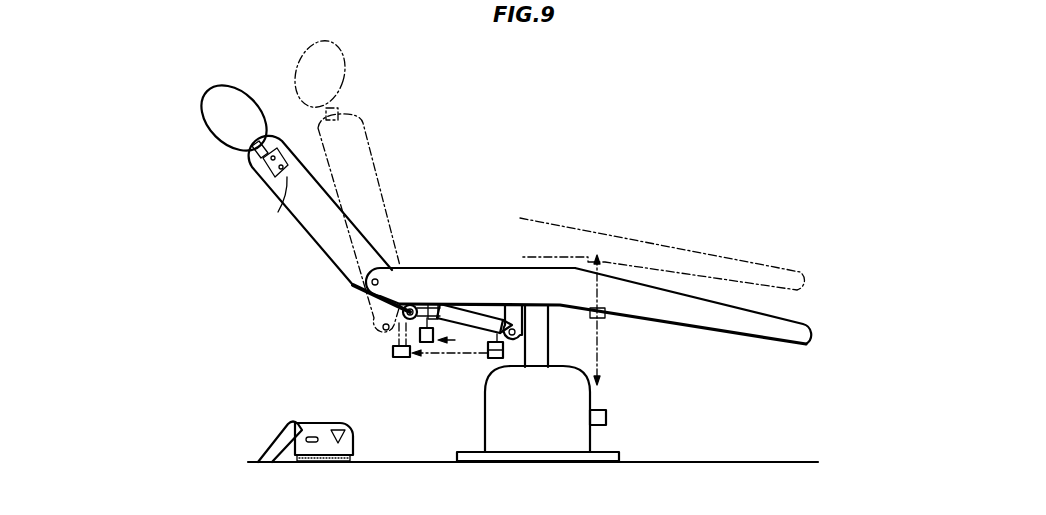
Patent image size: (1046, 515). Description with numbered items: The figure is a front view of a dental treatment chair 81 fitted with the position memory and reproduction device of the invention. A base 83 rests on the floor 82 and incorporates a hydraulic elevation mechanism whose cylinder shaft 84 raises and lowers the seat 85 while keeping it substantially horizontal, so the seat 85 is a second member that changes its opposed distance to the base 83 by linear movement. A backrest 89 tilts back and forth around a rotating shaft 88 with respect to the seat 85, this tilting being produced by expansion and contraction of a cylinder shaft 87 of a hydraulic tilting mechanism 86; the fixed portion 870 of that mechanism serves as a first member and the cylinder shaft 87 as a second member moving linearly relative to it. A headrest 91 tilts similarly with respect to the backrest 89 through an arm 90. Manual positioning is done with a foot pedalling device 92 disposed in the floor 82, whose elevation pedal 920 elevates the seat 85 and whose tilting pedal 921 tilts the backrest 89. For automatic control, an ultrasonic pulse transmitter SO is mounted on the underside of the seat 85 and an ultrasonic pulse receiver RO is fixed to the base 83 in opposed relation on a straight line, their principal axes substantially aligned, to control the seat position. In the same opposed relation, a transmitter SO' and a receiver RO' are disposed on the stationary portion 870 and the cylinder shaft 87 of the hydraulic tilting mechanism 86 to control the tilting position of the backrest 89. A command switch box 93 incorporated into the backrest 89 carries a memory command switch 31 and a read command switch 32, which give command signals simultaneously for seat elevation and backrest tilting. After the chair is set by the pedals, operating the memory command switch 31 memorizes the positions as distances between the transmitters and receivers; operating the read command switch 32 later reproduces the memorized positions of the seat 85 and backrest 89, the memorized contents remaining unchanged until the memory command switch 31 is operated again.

The memory command switch 31 is at (264, 172).
The read command switch 32 is at (270, 185).
The treatment chair 81 is at (483, 265).
The floor 82 is at (712, 460).
The base 83 is at (543, 443).
The cylinder shaft 84 is at (540, 338).
The seat 85 is at (650, 293).
The hydraulic tilting mechanism 86 is at (463, 343).
The cylinder shaft 87 is at (428, 316).
The fixed portion 870 is at (478, 323).
The rotating shaft 88 is at (353, 287).
The backrest 89 is at (368, 242).
The arm 90 is at (256, 158).
The headrest 91 is at (222, 118).
The foot pedalling device 92 is at (287, 436).
The elevation pedal 920 is at (314, 445).
The tilting pedal 921 is at (337, 426).
The command switch box 93 is at (286, 178).
The ultrasonic pulse receiver RO is at (620, 418).
The ultrasonic pulse transmitter SO is at (614, 320).
The ultrasonic pulse receiver RO' is at (415, 365).
The ultrasonic pulse transmitter SO' is at (479, 373).